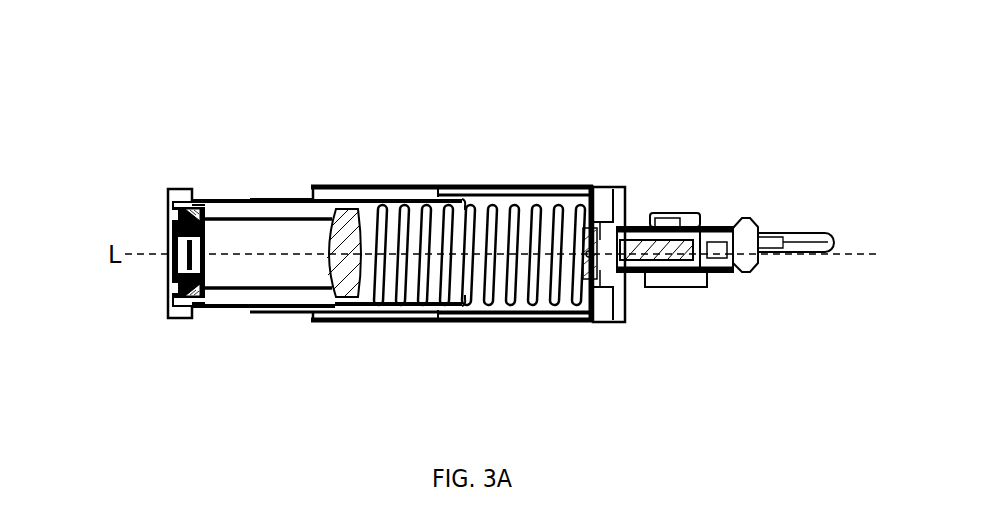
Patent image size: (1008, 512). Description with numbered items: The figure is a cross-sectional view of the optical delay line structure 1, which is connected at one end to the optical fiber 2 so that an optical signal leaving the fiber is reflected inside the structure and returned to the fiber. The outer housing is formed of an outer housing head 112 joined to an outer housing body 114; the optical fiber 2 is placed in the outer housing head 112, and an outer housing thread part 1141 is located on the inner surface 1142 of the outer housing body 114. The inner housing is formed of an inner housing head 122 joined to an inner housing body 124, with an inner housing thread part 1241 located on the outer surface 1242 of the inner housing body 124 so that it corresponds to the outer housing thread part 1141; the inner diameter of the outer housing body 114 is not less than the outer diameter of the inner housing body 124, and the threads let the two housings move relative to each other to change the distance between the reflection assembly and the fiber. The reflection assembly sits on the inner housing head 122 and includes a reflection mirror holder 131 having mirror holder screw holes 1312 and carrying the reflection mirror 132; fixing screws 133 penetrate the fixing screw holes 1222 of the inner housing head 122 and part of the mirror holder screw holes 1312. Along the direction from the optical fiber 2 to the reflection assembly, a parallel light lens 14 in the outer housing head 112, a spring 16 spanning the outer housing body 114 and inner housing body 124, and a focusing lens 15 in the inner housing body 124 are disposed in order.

The optical delay line structure 1 is at (606, 130).
The optical fiber 2 is at (675, 284).
The parallel light lens 14 is at (595, 310).
The focusing lens 15 is at (335, 300).
The spring 16 is at (457, 304).
The outer housing head 112 is at (612, 188).
The outer housing body 114 is at (482, 187).
The outer housing thread part 1141 is at (405, 187).
The inner surface of the outer housing body 1142 is at (424, 314).
The inner housing head 122 is at (183, 191).
The fixing screw holes 1222 is at (219, 218).
The inner housing body 124 is at (253, 304).
The inner housing thread part 1241 is at (307, 312).
The outer surface of the inner housing body 1242 is at (262, 191).
The reflection mirror holder 131 is at (185, 302).
The mirror holder screw holes 1312 is at (197, 202).
The reflection mirror 132 is at (172, 249).
The fixing screws 133 is at (172, 212).